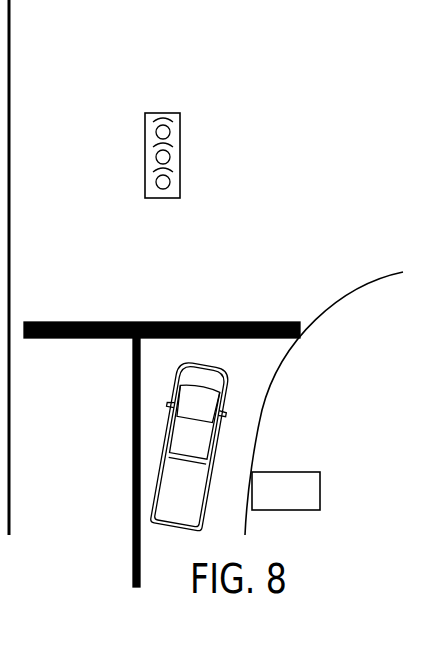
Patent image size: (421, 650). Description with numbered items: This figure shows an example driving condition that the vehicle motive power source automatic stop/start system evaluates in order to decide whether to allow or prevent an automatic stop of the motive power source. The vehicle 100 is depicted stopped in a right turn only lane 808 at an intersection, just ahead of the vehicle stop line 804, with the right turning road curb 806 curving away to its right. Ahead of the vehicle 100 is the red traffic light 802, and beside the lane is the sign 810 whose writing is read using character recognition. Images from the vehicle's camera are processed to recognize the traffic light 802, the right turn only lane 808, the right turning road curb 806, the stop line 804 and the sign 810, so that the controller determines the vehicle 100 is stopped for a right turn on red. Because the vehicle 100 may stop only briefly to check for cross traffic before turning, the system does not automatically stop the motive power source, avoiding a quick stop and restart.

The vehicle 100 is at (153, 487).
The traffic light 802 is at (145, 127).
The vehicle stop line 804 is at (155, 322).
The right turning road curb 806 is at (353, 273).
The right turn only lane 808 is at (158, 390).
The sign 810 is at (288, 472).